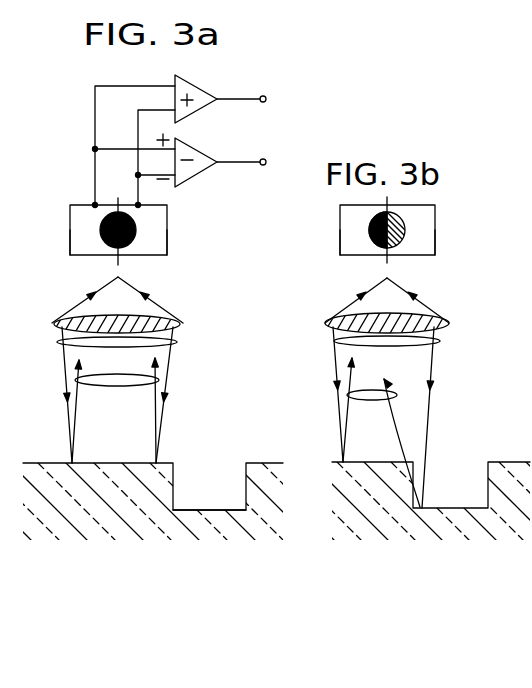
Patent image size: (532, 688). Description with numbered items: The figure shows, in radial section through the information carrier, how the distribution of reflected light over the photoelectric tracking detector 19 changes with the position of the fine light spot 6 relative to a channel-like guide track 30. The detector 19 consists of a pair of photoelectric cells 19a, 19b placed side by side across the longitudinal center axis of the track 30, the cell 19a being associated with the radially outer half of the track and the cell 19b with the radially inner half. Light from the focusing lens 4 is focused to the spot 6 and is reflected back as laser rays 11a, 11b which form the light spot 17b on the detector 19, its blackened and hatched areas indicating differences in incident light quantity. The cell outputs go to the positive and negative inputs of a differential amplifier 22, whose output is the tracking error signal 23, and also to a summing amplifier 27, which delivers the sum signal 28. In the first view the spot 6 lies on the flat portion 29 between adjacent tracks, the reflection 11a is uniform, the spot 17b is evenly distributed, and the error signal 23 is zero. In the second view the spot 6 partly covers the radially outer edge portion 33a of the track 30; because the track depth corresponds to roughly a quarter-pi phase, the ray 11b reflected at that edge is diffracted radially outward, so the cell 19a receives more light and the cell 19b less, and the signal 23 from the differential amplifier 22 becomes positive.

In FIG. 3A, the focusing lens 4 is at (172, 321).
In FIG. 3A, the fine light spot 6 is at (177, 342).
In FIG. 3B, the fine light spot 6 is at (435, 341).
In FIG. 3A, the reflected laser ray 11a is at (125, 387).
In FIG. 3B, the reflected laser ray 11b is at (372, 401).
In FIG. 3A, the light spot 17b is at (98, 227).
In FIG. 3A, the photoelectric tracking detector 19 is at (168, 210).
In FIG. 3A, the photoelectric cell 19a is at (77, 247).
In FIG. 3B, the photoelectric cell 19a is at (347, 247).
In FIG. 3A, the photoelectric cell 19b is at (167, 247).
In FIG. 3B, the photoelectric cell 19b is at (430, 247).
In FIG. 3A, the differential amplifier 22 is at (203, 150).
In FIG. 3A, the tracking error signal 23 is at (266, 160).
In FIG. 3A, the summing amplifier 27 is at (203, 86).
In FIG. 3A, the sum signal 28 is at (266, 96).
In FIG. 3A, the flat portion 29 is at (98, 463).
In FIG. 3A, the channel-like guide track 30 is at (205, 510).
In FIG. 3B, the radially outer edge portion 33a is at (394, 501).